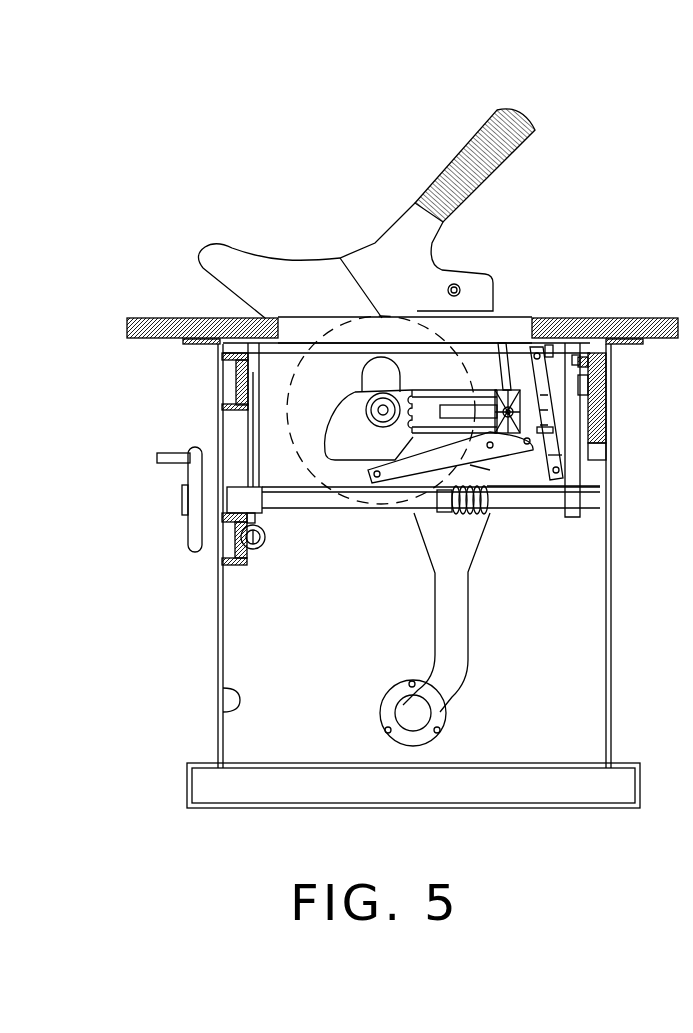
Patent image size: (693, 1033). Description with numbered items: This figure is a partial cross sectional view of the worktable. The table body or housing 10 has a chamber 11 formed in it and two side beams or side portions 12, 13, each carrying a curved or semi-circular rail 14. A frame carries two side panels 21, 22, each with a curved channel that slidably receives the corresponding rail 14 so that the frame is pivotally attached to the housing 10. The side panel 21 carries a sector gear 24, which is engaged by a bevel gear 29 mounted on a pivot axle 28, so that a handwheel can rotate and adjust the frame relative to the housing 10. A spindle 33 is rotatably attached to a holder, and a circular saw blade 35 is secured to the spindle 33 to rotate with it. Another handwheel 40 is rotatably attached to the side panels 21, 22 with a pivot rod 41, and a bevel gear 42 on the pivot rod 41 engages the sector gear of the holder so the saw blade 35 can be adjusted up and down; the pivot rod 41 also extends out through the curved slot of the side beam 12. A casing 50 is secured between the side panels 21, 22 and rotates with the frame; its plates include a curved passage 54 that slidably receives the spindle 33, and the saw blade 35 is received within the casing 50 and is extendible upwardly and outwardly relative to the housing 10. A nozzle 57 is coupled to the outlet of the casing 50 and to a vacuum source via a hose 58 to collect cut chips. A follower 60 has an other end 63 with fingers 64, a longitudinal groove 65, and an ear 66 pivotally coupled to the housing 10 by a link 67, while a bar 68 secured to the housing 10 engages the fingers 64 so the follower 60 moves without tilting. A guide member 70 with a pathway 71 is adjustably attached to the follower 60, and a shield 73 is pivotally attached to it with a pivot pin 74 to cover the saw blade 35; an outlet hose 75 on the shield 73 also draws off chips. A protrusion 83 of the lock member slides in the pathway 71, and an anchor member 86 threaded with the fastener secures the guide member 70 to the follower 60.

The housing 10 is at (217, 653).
The chamber 11 is at (232, 703).
The side beam 12 is at (221, 363).
The side beam 13 is at (610, 370).
The rail 14 is at (617, 320).
The side panel 21 is at (243, 482).
The side panel 22 is at (580, 512).
The sector gear 24 is at (237, 518).
The pivot axle 28 is at (233, 536).
The bevel gear 29 is at (257, 552).
The spindle 33 is at (362, 403).
The saw blade 35 is at (297, 330).
The handwheel 40 is at (195, 477).
The pivot rod 41 is at (522, 507).
The bevel gear 42 is at (480, 470).
The casing 50 is at (270, 467).
The curved passage 54 is at (387, 367).
The nozzle 57 is at (490, 518).
The hose 58 is at (452, 612).
The follower 60 is at (443, 392).
The other end 63 is at (552, 432).
The fingers 64 is at (545, 428).
The groove 65 is at (510, 392).
The ear 66 is at (345, 466).
The link 67 is at (483, 495).
The bar 68 is at (555, 458).
The guide member 70 is at (500, 395).
The pathway 71 is at (527, 375).
The shield 73 is at (238, 263).
The pivot pin 74 is at (456, 283).
The outlet hose 75 is at (454, 160).
The protrusion 83 is at (552, 350).
The anchor member 86 is at (578, 362).